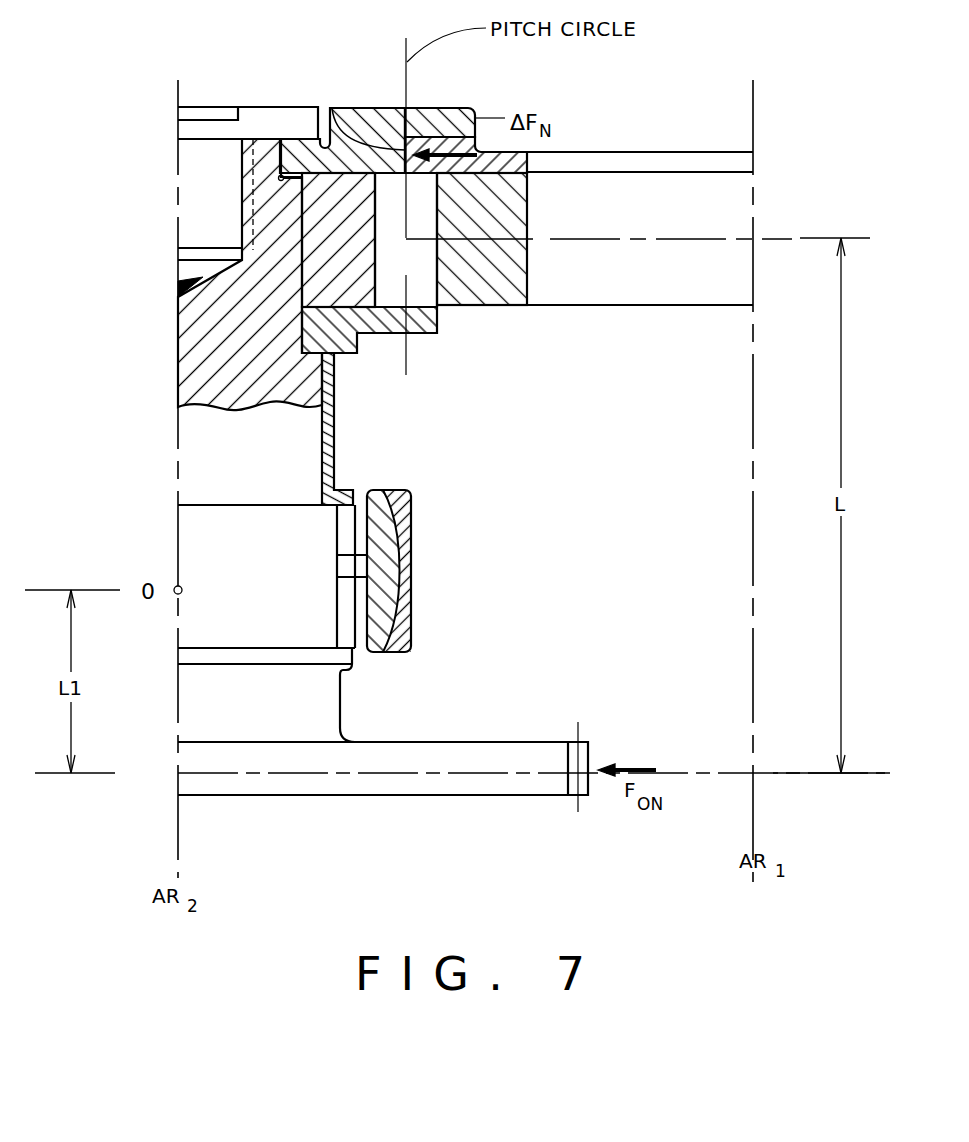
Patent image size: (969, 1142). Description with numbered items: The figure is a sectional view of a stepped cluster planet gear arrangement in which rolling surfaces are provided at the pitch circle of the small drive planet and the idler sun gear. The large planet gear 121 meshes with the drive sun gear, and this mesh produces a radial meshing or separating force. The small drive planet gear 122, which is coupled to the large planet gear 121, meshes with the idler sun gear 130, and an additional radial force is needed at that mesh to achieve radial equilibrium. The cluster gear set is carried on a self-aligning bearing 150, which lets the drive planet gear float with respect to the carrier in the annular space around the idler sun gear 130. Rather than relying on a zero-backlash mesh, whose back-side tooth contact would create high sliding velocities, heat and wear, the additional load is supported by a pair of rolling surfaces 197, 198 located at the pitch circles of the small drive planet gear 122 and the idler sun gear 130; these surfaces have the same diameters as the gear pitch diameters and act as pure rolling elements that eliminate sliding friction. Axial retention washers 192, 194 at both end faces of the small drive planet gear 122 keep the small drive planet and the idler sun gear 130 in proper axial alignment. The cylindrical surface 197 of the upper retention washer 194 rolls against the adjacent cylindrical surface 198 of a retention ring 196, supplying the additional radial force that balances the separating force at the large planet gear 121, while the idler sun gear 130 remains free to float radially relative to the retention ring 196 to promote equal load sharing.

The large planet gear 121 is at (505, 763).
The small drive planet gear 122 is at (361, 288).
The idler sun gear 130 is at (518, 302).
The self-aligning bearing 150 is at (390, 564).
The axial retention washer 192 is at (440, 330).
The axial retention washer 194 is at (475, 107).
The retention ring 196 is at (567, 163).
The rolling surface 197 is at (330, 140).
The rolling surface 198 is at (403, 127).